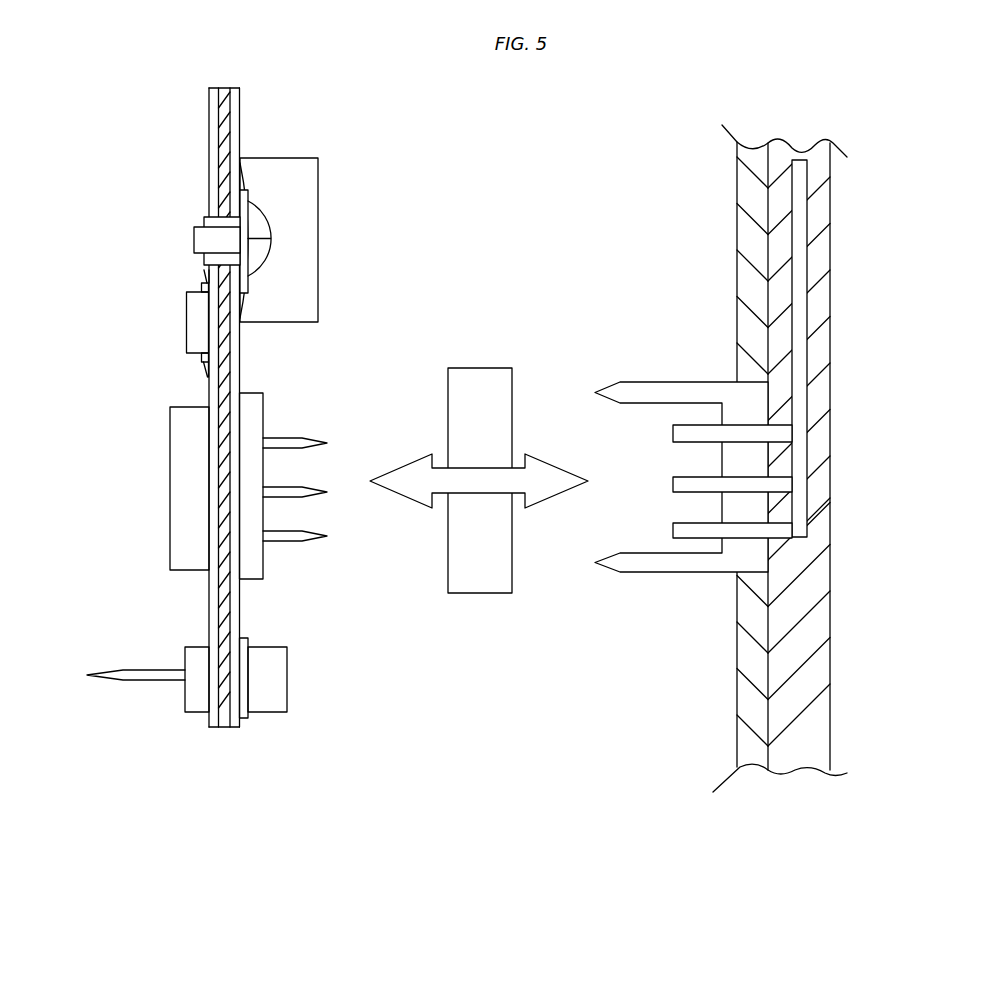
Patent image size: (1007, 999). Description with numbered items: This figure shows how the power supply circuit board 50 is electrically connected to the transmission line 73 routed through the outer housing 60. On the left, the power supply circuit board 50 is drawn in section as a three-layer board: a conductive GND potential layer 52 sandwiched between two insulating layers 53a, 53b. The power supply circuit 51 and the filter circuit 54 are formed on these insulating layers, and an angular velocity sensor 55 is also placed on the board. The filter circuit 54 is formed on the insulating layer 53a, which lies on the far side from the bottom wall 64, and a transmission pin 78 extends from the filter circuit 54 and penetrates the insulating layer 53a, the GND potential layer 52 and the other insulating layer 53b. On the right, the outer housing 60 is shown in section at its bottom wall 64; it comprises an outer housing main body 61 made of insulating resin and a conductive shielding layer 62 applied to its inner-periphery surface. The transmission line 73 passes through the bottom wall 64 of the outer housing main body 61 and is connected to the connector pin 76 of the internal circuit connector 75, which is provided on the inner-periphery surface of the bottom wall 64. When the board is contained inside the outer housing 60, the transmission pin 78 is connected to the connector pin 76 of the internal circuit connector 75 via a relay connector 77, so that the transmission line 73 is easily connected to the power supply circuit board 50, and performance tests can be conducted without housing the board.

The power supply circuit board 50 is at (223, 512).
The power supply circuit 51 is at (187, 748).
The GND potential layer 52 is at (225, 720).
The insulating layer 53a is at (212, 717).
The insulating layer 53b is at (232, 717).
The filter circuit 54 is at (178, 450).
The angular velocity sensor 55 is at (300, 175).
The outer housing 60 is at (731, 534).
The outer housing main body 61 is at (780, 500).
The shielding layer 62 is at (740, 757).
The bottom wall 64 is at (800, 602).
The transmission line 73 is at (810, 203).
The internal circuit connector 75 is at (663, 381).
The connector pin 76 is at (673, 432).
The relay connector 77 is at (475, 578).
The transmission pin 78 is at (294, 437).